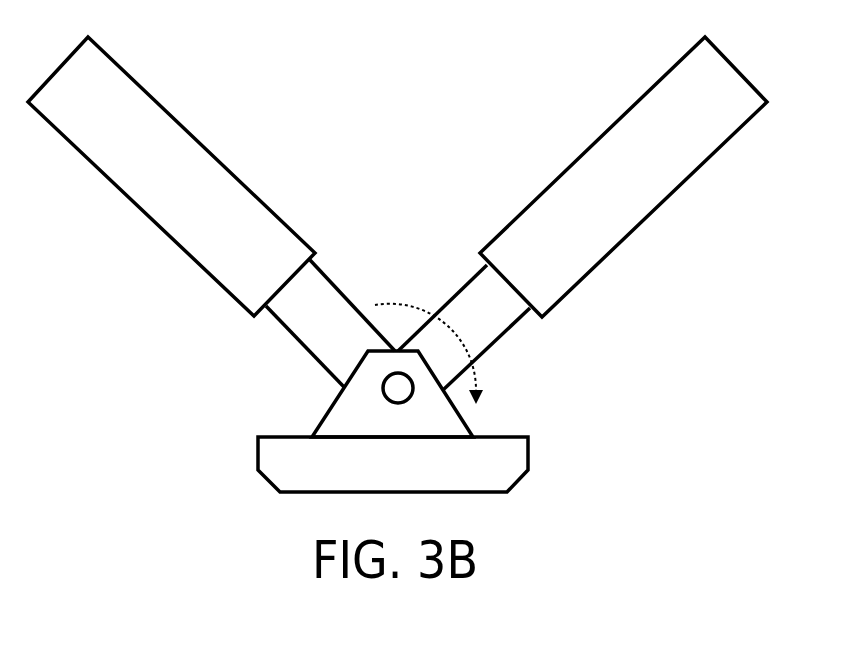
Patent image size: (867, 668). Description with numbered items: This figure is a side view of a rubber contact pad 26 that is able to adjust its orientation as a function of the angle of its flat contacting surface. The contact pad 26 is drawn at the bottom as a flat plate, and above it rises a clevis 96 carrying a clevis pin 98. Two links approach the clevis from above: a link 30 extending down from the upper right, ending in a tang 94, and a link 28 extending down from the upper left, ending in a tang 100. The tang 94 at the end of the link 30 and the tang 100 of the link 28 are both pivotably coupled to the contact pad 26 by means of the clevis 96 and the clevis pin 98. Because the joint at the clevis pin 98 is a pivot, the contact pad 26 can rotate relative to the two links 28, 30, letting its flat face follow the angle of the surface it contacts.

The contact pad 26 is at (540, 447).
The link 28 is at (135, 203).
The link 30 is at (688, 178).
The tang 94 is at (462, 290).
The clevis 96 is at (467, 419).
The clevis pin 98 is at (382, 392).
The tang 100 is at (322, 270).